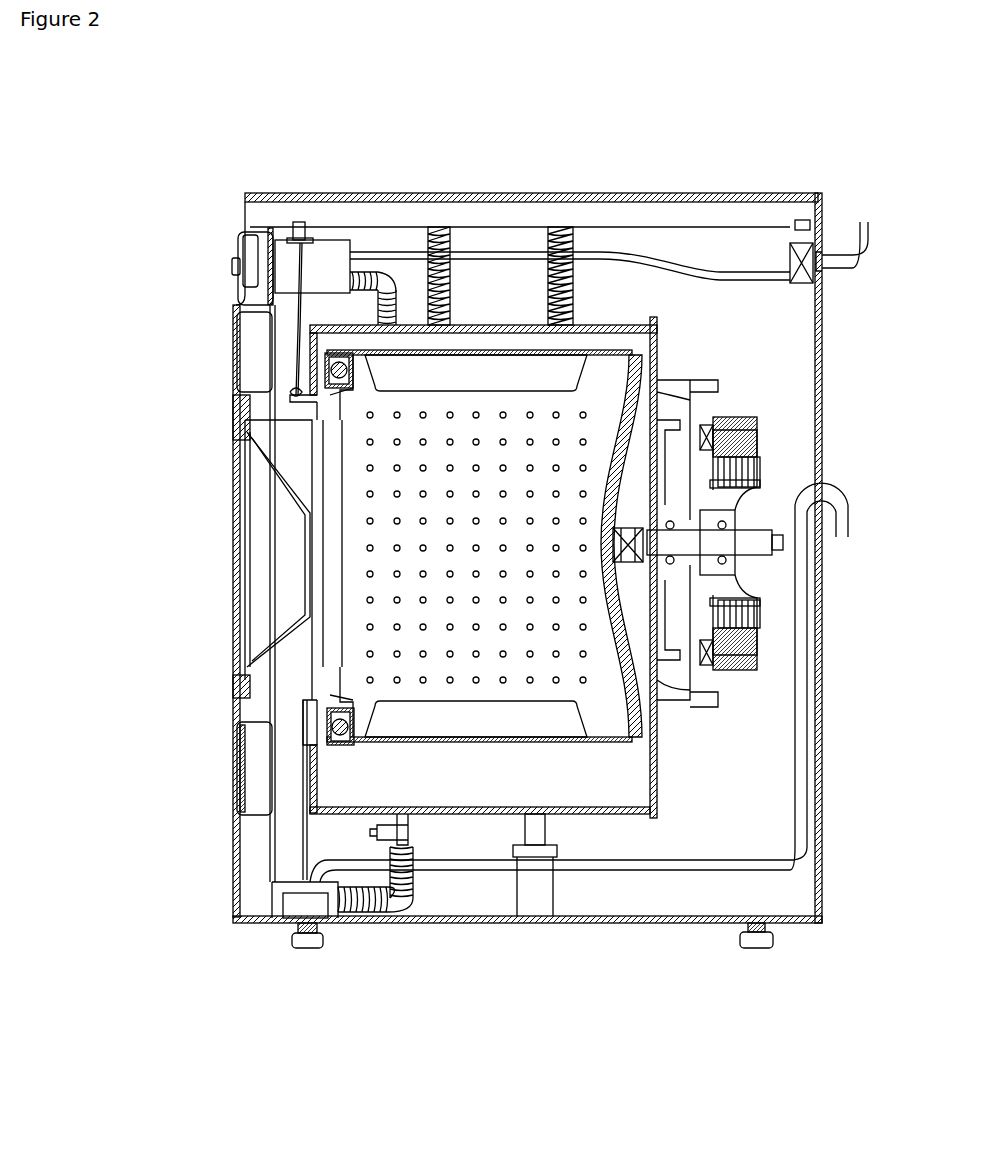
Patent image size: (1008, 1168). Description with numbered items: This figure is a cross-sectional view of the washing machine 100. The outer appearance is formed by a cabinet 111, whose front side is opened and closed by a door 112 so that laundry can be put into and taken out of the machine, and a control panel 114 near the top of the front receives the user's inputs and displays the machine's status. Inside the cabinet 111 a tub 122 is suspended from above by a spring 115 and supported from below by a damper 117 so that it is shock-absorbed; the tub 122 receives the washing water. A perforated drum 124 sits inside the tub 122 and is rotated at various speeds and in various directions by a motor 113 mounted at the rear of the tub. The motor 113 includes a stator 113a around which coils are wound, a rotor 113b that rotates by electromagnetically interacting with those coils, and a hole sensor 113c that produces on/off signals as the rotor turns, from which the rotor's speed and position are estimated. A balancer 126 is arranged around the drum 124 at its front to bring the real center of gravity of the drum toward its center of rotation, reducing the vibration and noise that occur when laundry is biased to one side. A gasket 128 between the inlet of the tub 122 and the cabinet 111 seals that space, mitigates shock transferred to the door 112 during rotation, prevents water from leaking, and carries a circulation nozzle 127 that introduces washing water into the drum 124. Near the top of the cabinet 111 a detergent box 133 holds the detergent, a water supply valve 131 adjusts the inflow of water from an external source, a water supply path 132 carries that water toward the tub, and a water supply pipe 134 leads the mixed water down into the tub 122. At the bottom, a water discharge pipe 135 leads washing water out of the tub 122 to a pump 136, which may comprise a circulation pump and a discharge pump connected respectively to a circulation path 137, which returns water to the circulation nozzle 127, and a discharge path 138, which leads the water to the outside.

The washing machine 100 is at (352, 148).
The cabinet 111 is at (822, 852).
The door 112 is at (256, 553).
The motor 113 is at (762, 543).
The stator 113a is at (750, 437).
The rotor 113b is at (747, 462).
The hole sensor 113c is at (745, 610).
The control panel 114 is at (246, 300).
The spring 115 is at (558, 228).
The damper 117 is at (540, 892).
The tub 122 is at (660, 338).
The drum 124 is at (662, 392).
The balancer 126 is at (324, 388).
The circulation nozzle 127 is at (296, 398).
The gasket 128 is at (292, 400).
The water supply valve 131 is at (798, 244).
The water supply path 132 is at (665, 262).
The detergent box 133 is at (340, 250).
The hose 134 is at (382, 288).
The water discharge pipe 135 is at (392, 908).
The pump 136 is at (300, 908).
The circulation path 137 is at (300, 803).
The discharge path 138 is at (436, 872).